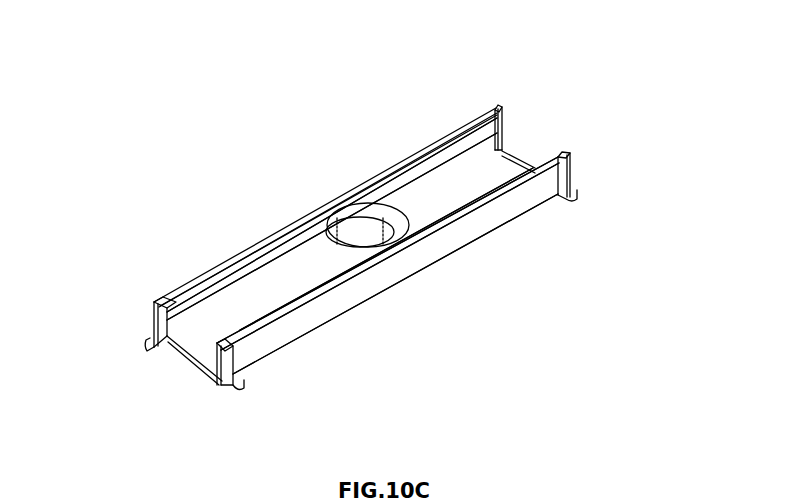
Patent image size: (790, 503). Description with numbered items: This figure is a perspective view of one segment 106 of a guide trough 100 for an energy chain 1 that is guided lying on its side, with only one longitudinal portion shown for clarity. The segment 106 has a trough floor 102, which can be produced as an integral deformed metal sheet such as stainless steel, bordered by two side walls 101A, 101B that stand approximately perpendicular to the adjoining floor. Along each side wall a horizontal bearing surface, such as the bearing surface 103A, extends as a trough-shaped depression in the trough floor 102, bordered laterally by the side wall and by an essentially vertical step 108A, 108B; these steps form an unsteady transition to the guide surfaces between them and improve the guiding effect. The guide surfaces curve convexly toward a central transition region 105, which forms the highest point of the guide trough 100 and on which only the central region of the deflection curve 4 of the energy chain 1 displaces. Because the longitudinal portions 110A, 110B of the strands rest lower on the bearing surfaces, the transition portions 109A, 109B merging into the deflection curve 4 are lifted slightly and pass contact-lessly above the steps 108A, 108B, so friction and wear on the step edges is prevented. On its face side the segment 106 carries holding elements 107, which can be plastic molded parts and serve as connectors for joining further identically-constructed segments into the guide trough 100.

The guide trough 100 is at (118, 275).
The energy chain 1 is at (272, 243).
The deflection curve 4 is at (387, 217).
The side wall 101A is at (430, 168).
The side wall 101B is at (512, 200).
The trough floor 102 is at (527, 171).
The bearing surface 103A is at (503, 152).
The transition region 105 is at (196, 358).
The segment 106 is at (447, 240).
The holding element 107 is at (569, 188).
The step 108A is at (170, 345).
The step 108B is at (215, 372).
The transition portion 109A is at (323, 217).
The transition portion 109B is at (378, 250).
The longitudinal portion 110A is at (217, 285).
The longitudinal portion 110B is at (283, 310).